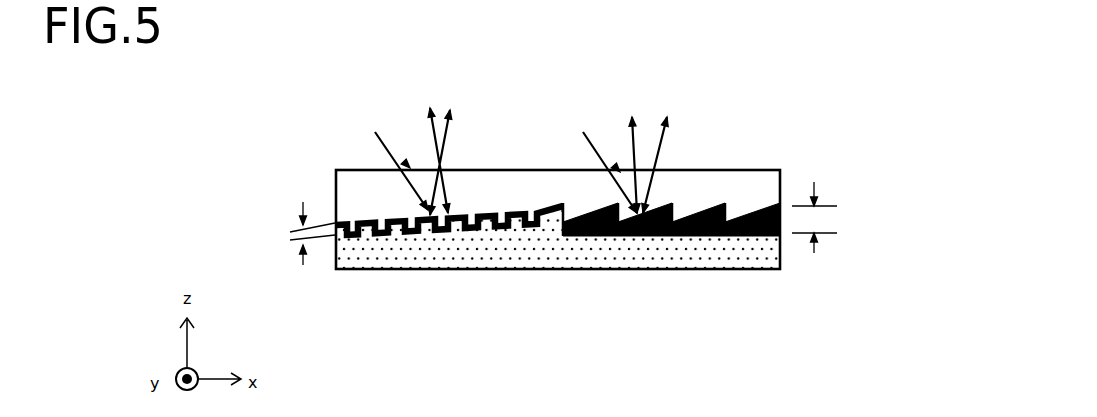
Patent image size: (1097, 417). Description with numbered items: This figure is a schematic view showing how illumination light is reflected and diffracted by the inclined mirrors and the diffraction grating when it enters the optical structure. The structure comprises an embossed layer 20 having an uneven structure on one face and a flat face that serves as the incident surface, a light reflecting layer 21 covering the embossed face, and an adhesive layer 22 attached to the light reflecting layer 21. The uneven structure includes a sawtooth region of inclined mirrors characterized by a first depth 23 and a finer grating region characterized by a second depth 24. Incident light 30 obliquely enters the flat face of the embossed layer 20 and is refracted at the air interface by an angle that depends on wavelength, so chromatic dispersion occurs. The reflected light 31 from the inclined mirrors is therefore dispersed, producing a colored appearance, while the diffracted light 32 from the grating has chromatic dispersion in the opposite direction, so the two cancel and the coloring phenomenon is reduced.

The embossed layer 20 is at (753, 170).
The light reflecting layer 21 is at (712, 223).
The adhesive layer 22 is at (585, 267).
The first depth 23 is at (840, 220).
The second depth 24 is at (290, 238).
The incident light 30 is at (360, 102).
The reflected light 31 is at (692, 84).
The diffracted light 32 is at (485, 84).